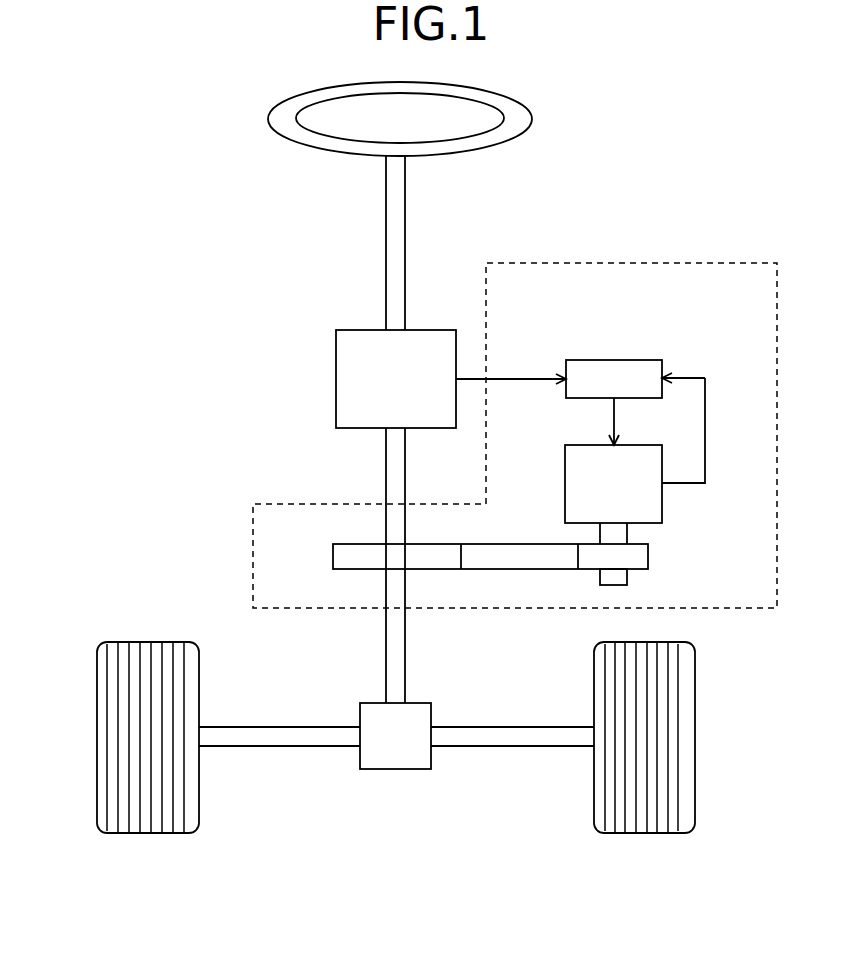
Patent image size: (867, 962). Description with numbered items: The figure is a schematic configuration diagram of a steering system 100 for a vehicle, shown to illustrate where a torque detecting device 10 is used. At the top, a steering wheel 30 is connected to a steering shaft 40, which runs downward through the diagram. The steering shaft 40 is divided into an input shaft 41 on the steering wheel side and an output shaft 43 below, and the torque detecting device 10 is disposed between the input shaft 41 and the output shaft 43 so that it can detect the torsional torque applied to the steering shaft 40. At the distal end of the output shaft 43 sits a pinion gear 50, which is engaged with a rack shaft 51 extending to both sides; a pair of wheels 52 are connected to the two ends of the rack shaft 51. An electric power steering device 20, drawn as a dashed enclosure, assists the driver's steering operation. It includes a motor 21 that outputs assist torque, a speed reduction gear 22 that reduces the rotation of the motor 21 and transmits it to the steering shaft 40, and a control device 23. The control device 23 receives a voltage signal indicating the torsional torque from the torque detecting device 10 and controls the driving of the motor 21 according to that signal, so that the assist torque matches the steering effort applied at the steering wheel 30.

The steering system 100 is at (703, 169).
The steering wheel 30 is at (532, 115).
The steering shaft 40 is at (397, 429).
The input shaft 41 is at (386, 301).
The output shaft 43 is at (386, 465).
The torque detecting device 10 is at (336, 357).
The electric power steering device 20 is at (777, 306).
The control device 23 is at (640, 360).
The motor 21 is at (640, 445).
The speed reduction gear 22 is at (648, 556).
The pinion gear 50 is at (395, 769).
The rack shaft 51 is at (287, 746).
The wheels 52 is at (93, 680).